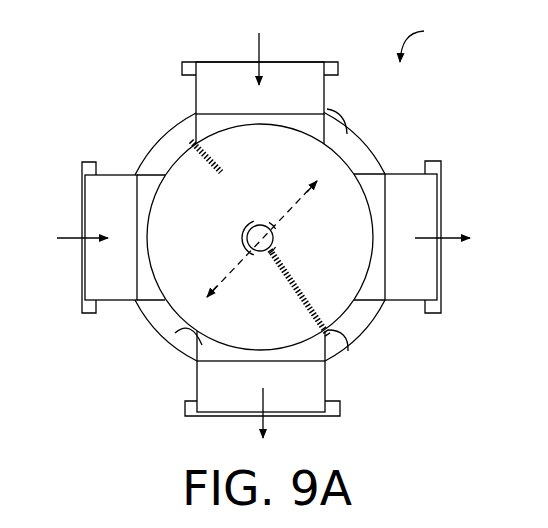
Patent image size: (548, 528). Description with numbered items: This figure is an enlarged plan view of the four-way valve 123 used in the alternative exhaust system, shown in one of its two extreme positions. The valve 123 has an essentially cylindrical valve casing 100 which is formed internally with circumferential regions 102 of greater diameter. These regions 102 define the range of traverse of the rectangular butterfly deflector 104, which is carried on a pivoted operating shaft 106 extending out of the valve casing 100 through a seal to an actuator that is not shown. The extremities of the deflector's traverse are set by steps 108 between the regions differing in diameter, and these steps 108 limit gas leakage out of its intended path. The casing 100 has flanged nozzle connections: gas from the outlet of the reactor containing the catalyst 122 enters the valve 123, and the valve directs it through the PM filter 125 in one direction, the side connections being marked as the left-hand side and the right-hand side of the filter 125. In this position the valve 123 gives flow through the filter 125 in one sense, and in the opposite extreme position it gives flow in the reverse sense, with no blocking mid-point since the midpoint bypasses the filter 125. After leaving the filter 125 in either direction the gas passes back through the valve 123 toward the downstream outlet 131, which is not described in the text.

The shell / housing 100 is at (163, 143).
The chamber 102 is at (281, 162).
The baffle plate 104 is at (247, 203).
The center pipe 106 is at (273, 238).
The weld 108 is at (346, 126).
The inlet nozzle 122 is at (260, 44).
The vessel assembly 123 is at (431, 36).
The side flow 125 is at (58, 240).
The outlet nozzle 131 is at (262, 426).